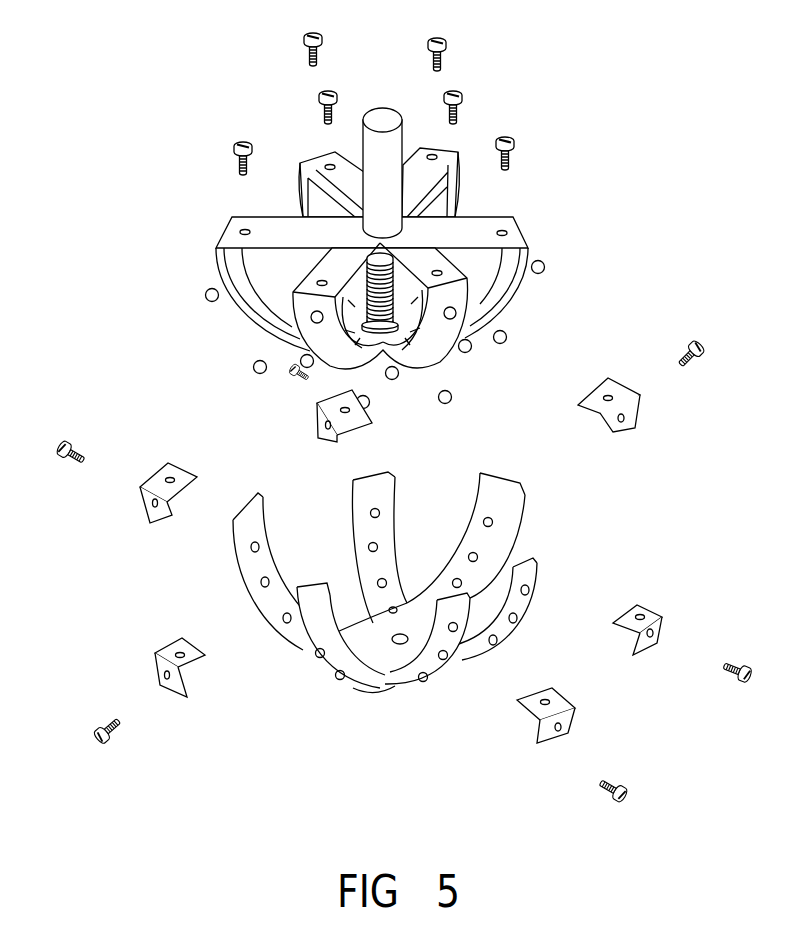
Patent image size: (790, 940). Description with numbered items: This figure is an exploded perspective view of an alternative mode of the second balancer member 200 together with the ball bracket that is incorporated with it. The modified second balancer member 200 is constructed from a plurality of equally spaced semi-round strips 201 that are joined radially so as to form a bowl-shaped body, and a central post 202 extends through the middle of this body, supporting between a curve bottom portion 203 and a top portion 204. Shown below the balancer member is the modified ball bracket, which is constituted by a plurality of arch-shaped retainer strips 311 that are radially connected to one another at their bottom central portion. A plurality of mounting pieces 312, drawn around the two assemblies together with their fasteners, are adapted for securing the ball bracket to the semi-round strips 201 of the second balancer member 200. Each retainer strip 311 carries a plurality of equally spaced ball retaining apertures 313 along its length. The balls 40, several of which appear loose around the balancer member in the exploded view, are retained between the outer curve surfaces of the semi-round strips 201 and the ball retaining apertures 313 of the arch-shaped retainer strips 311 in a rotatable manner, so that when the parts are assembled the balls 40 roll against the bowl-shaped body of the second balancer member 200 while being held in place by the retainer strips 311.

The second balancer member 200 is at (456, 238).
The semi-round strips 201 is at (490, 295).
The central post 202 is at (390, 143).
The curve bottom portion 203 is at (383, 352).
The top portion 204 is at (410, 233).
The balls 40 is at (452, 397).
The arch-shaped retainer strips 311 is at (441, 566).
The mounting pieces 312 is at (160, 651).
The ball retaining apertures 313 is at (485, 519).